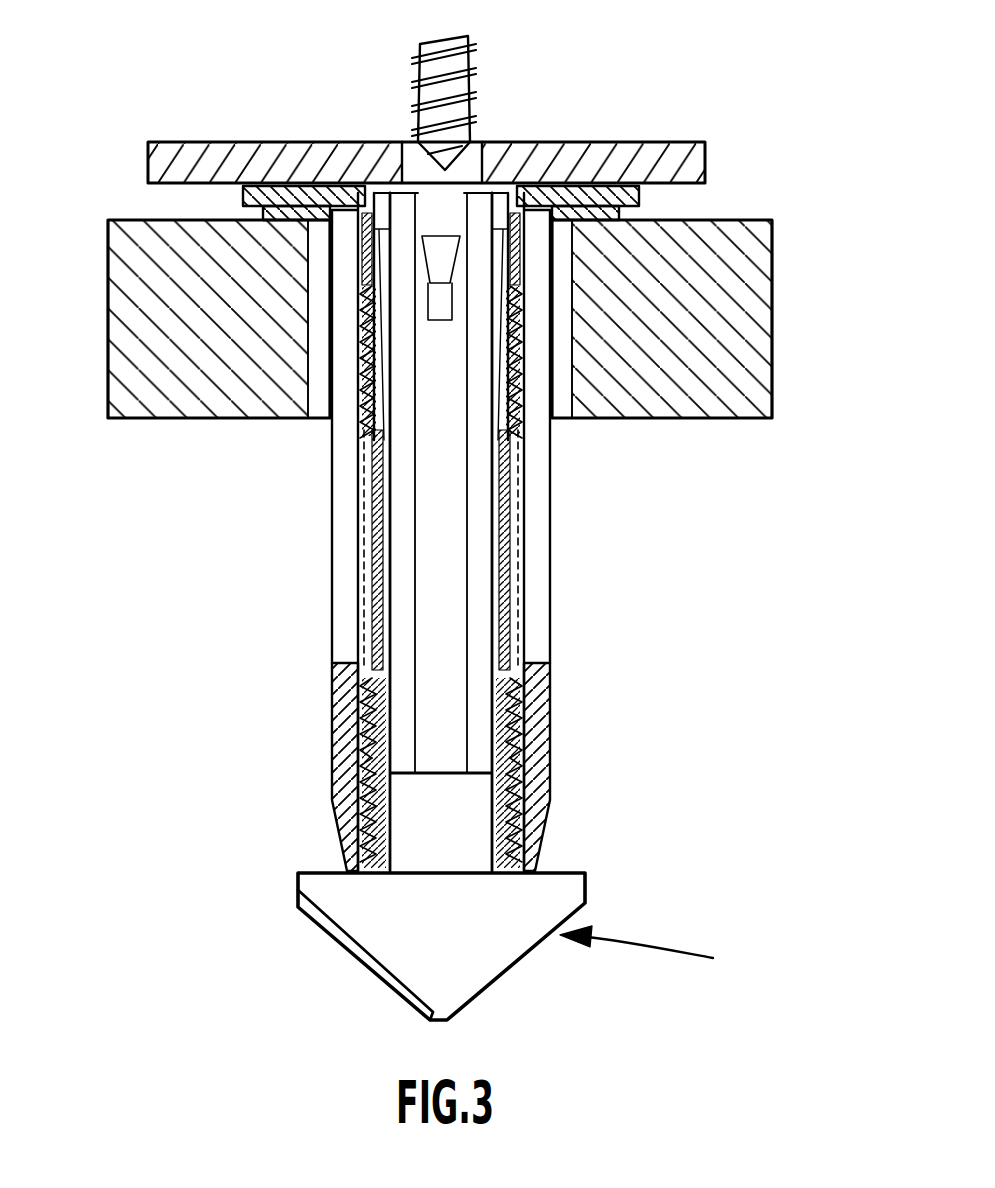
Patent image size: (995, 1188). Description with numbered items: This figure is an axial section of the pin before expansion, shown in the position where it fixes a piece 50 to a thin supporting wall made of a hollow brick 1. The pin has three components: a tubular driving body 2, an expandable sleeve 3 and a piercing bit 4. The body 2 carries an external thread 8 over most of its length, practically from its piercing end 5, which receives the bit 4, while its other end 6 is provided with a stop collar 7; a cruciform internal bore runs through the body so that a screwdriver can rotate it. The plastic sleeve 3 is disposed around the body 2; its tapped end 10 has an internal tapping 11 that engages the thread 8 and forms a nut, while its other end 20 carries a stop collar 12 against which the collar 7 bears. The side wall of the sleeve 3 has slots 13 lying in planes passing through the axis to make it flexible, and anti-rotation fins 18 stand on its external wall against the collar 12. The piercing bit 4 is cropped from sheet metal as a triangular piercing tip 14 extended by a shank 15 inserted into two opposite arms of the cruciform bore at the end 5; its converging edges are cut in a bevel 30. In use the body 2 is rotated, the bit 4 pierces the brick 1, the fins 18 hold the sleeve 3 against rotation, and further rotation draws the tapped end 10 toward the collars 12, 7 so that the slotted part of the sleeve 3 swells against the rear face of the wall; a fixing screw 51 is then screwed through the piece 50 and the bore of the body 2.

The hollow brick 1 is at (743, 328).
The driving body 2 is at (498, 527).
The expandable sleeve 3 is at (533, 600).
The piercing bit 4 is at (643, 954).
The piercing end of the body 5 is at (343, 840).
The other end of the body 6 is at (525, 319).
The stop collar of the body 7 is at (577, 203).
The external thread 8 is at (515, 703).
The tapped end of the sleeve 10 is at (553, 775).
The internal tapping 11 is at (542, 832).
The stop collar of the sleeve 12 is at (283, 213).
The slots 13 is at (343, 558).
The triangular piercing tip 14 is at (487, 945).
The shank 15 is at (430, 807).
The anti-rotation fins 18 is at (324, 278).
The other end of the sleeve 20 is at (343, 253).
The bevel 30 is at (368, 958).
The piece to be fixed 50 is at (523, 165).
The fixing screw 51 is at (433, 55).